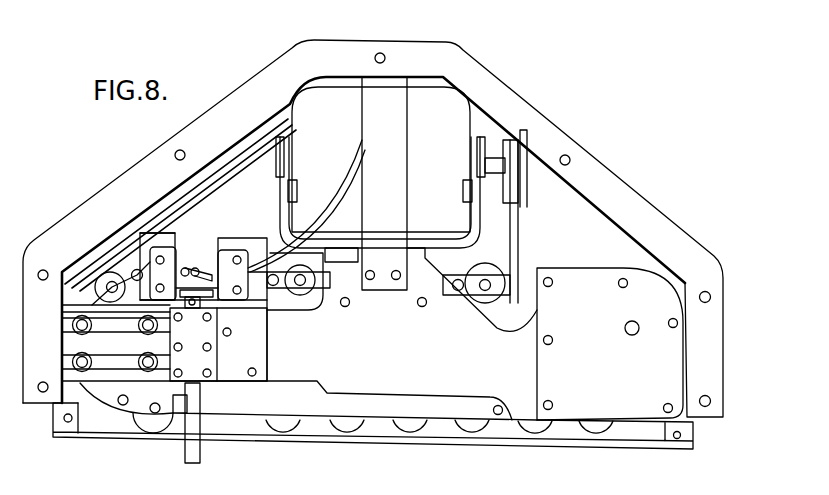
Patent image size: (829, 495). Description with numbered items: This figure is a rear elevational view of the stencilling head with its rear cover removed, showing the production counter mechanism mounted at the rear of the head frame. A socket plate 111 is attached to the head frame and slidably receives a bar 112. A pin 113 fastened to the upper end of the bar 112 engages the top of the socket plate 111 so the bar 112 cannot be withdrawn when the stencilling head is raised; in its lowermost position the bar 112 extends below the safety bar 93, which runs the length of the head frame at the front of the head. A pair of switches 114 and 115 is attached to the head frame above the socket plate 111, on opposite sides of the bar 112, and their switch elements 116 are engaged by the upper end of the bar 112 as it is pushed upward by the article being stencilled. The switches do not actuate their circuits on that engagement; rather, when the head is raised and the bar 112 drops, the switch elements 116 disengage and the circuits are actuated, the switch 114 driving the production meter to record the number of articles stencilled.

The safety bar 93 is at (313, 430).
The socket plate 111 is at (208, 357).
The bar 112 is at (185, 449).
The pin 113 is at (189, 309).
The switch 114 is at (233, 254).
The switch 115 is at (165, 256).
The switch elements 116 is at (185, 268).